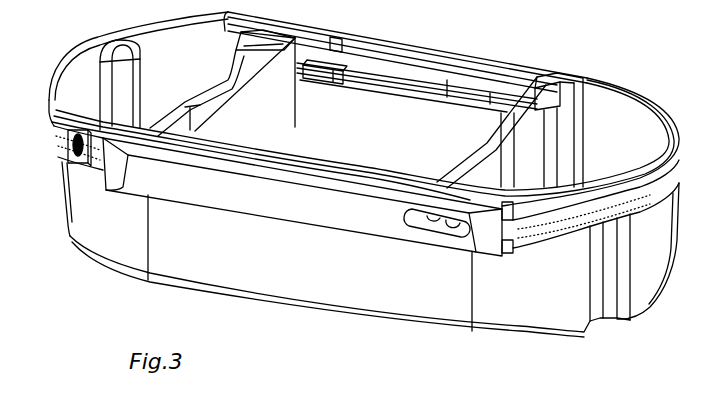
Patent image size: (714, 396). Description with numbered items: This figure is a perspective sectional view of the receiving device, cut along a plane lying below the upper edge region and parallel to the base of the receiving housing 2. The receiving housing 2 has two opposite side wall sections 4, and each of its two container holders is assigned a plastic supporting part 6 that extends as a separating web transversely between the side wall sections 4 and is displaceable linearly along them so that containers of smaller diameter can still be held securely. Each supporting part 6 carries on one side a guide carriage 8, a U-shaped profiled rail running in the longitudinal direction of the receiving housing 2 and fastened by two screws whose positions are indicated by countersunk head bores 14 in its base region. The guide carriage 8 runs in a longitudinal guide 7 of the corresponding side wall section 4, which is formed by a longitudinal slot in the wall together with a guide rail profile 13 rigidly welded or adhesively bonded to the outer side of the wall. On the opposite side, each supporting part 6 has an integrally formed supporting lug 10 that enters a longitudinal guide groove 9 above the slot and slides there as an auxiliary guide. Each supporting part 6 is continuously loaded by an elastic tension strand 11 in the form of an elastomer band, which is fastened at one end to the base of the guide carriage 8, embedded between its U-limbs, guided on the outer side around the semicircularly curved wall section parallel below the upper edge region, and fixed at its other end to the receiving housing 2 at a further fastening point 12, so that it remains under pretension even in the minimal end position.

The receiving housing 2 is at (258, 273).
The side wall section 4 is at (400, 153).
The supporting part 6 is at (277, 123).
The longitudinal guide 7 is at (420, 88).
The guide carriage 8 is at (370, 78).
The longitudinal guide groove 9 is at (433, 58).
The supporting lug 10 is at (560, 73).
The elastic tension strand 11 is at (55, 128).
The further fastening point 12 is at (63, 160).
The guide rail profile 13 is at (293, 206).
The countersunk head bore 14 is at (453, 232).